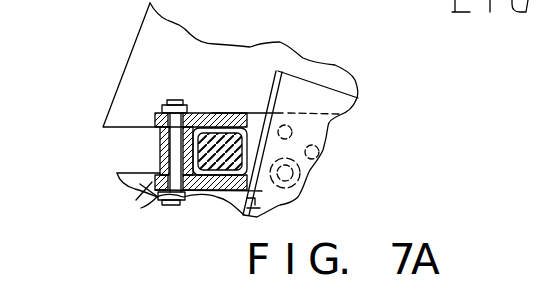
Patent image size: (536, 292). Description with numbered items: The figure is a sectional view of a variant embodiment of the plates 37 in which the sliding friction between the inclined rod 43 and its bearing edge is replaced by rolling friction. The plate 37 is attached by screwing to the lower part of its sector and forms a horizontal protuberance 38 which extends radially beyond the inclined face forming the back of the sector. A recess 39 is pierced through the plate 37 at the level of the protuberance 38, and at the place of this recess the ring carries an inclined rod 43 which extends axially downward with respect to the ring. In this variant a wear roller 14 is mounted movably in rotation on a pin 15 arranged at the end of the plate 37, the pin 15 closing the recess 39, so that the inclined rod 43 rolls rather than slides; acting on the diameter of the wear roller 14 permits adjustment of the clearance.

The wear roller 14 is at (162, 160).
The pin 15 is at (157, 186).
The plate 37 is at (252, 115).
The horizontal protuberance 38 is at (143, 188).
The recess 39 is at (213, 193).
The inclined rod 43 is at (212, 125).